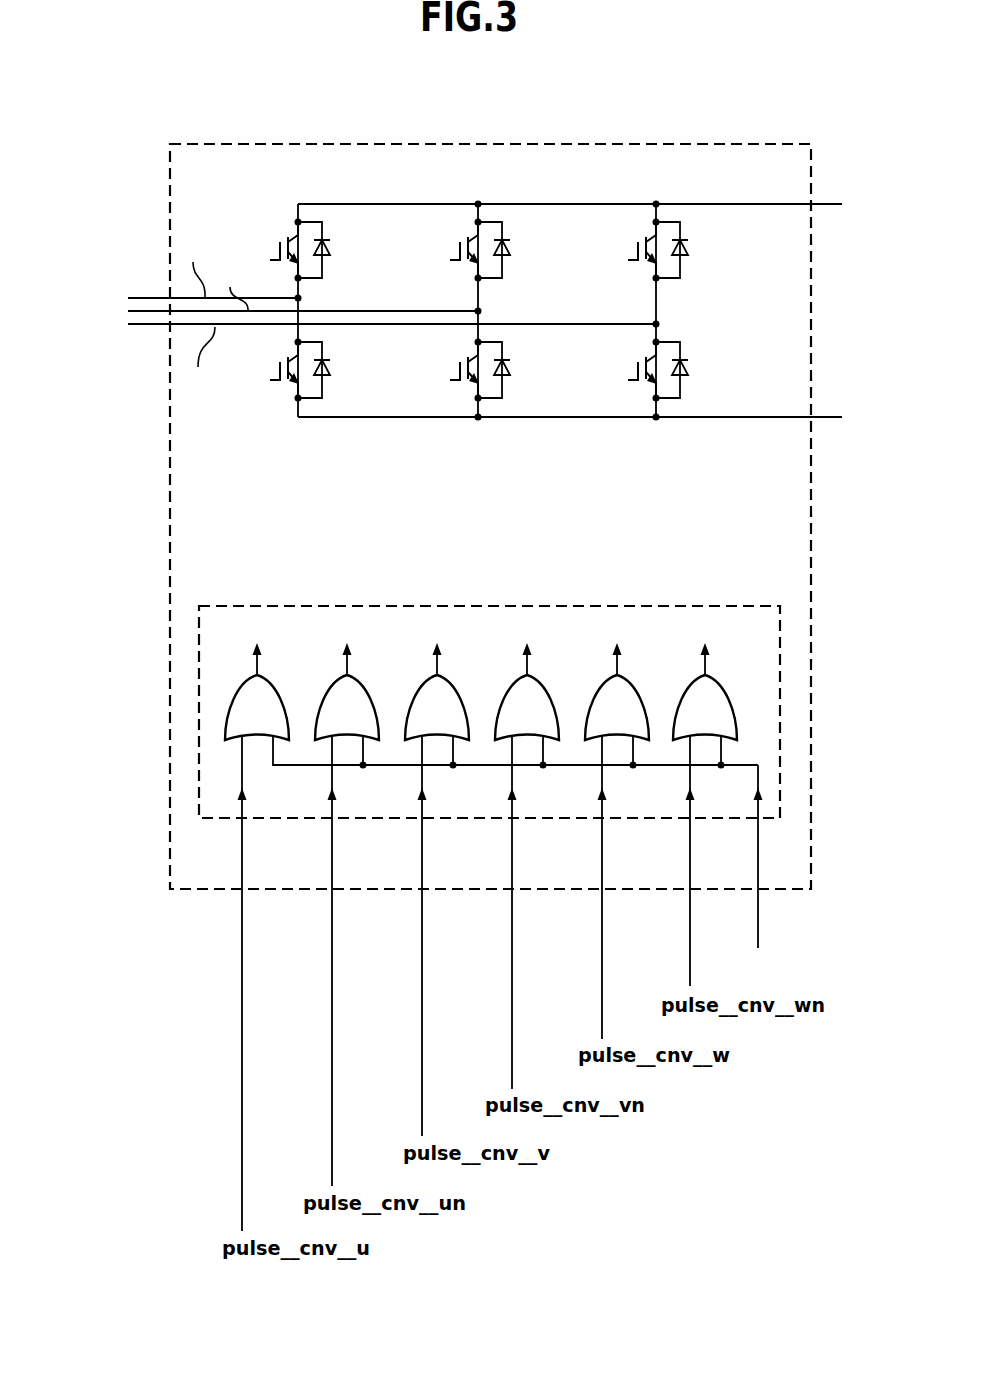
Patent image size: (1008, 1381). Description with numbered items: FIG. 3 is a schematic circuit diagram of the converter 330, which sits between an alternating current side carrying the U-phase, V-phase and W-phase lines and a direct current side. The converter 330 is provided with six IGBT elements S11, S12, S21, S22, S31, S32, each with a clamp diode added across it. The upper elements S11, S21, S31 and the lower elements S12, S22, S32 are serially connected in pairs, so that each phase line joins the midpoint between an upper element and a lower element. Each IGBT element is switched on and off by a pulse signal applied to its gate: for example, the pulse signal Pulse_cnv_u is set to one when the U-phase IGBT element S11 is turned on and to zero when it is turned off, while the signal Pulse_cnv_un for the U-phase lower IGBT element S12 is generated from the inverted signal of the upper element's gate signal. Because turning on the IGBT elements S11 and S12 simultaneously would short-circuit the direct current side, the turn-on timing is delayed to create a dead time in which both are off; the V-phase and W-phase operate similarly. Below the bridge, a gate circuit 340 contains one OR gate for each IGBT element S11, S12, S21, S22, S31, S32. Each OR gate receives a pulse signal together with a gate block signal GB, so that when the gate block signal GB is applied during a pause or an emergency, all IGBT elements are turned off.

The converter 330 is at (471, 144).
The gate circuit 340 is at (462, 606).
The IGBT element S11 is at (279, 248).
The IGBT element S12 is at (279, 368).
The IGBT element S21 is at (459, 248).
The IGBT element S22 is at (459, 368).
The IGBT element S31 is at (638, 248).
The IGBT element S32 is at (638, 368).
The gate block signal GB is at (756, 873).